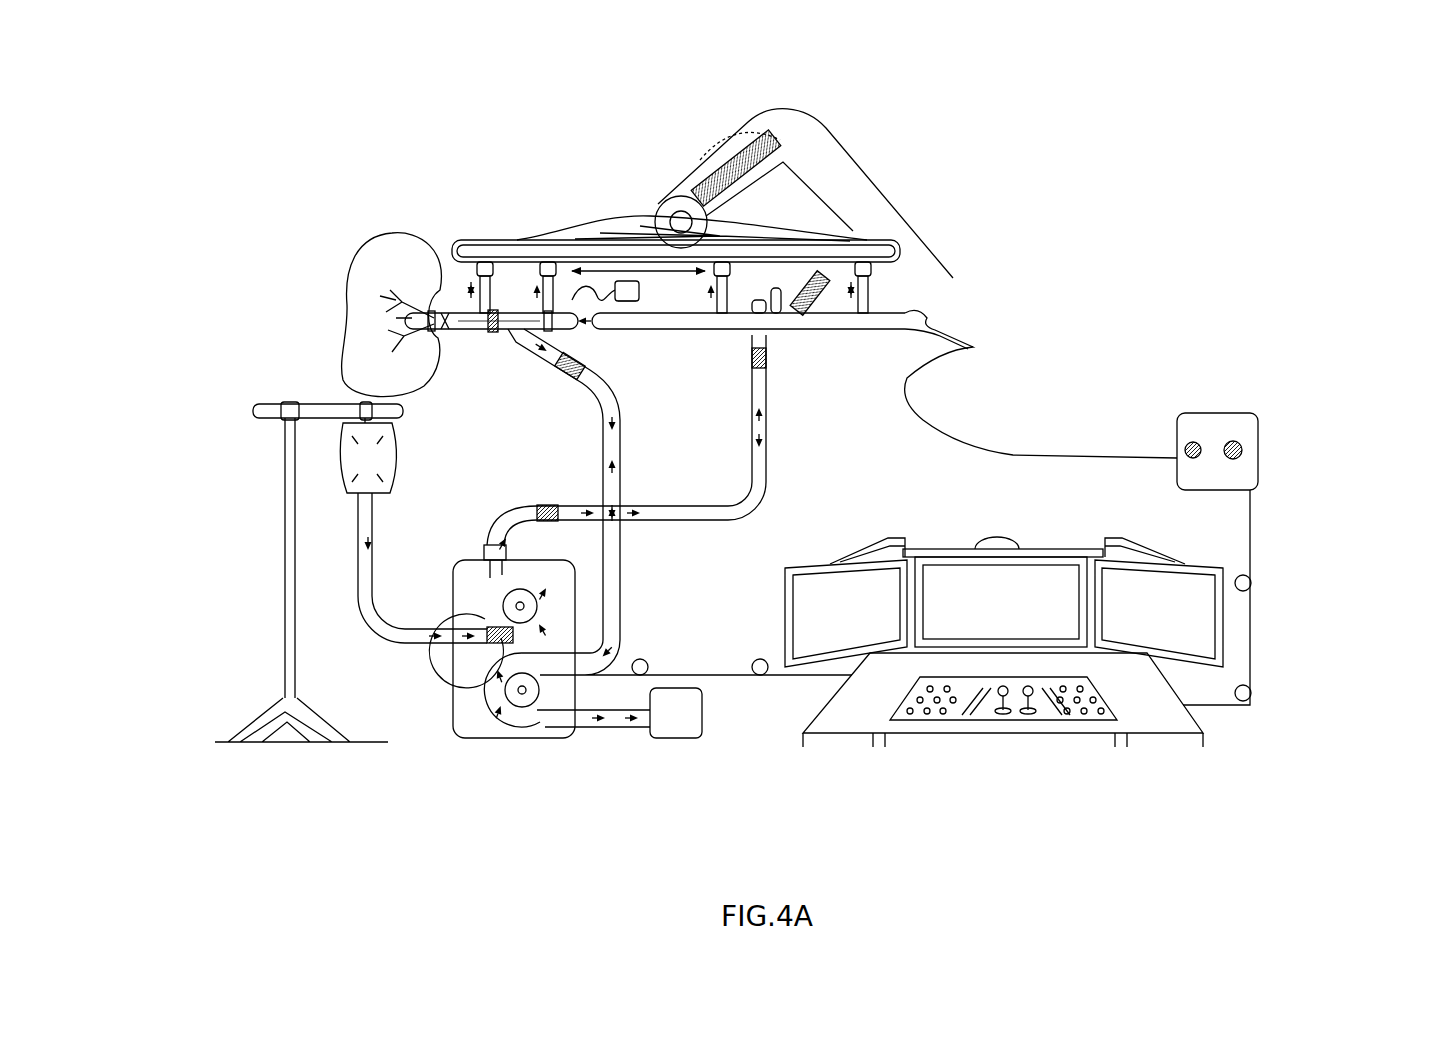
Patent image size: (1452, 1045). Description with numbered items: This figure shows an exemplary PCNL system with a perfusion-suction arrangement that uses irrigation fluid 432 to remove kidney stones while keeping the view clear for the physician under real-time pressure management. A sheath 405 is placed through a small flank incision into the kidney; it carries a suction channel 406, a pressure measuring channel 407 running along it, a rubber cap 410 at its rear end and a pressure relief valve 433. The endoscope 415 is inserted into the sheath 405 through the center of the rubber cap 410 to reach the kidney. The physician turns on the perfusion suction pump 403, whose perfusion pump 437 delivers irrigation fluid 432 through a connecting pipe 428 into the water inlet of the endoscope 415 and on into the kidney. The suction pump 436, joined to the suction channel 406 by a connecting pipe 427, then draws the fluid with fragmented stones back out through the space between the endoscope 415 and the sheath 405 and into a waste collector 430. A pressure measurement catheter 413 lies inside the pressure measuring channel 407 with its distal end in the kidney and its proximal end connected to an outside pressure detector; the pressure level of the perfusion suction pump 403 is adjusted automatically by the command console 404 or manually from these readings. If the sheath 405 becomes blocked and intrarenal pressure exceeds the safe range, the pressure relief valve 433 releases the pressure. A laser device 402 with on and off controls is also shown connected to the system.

The laser device 402 is at (1262, 452).
The perfusion suction pump 403 is at (415, 739).
The command console 404 is at (1023, 738).
The sheath 405 is at (447, 312).
The suction channel 406 is at (523, 340).
The pressure measuring channel 407 is at (515, 312).
The rubber cap 410 is at (632, 302).
The pressure measurement catheter 413 is at (593, 280).
The endoscope 415 is at (838, 310).
The connecting pipe 427 is at (620, 566).
The connecting pipe 428 is at (767, 486).
The waste collector 430 is at (681, 718).
The irrigation fluid 432 is at (333, 460).
The pressure relief valve 433 is at (492, 332).
The suction pump 436 is at (525, 697).
The perfusion pump 437 is at (518, 612).